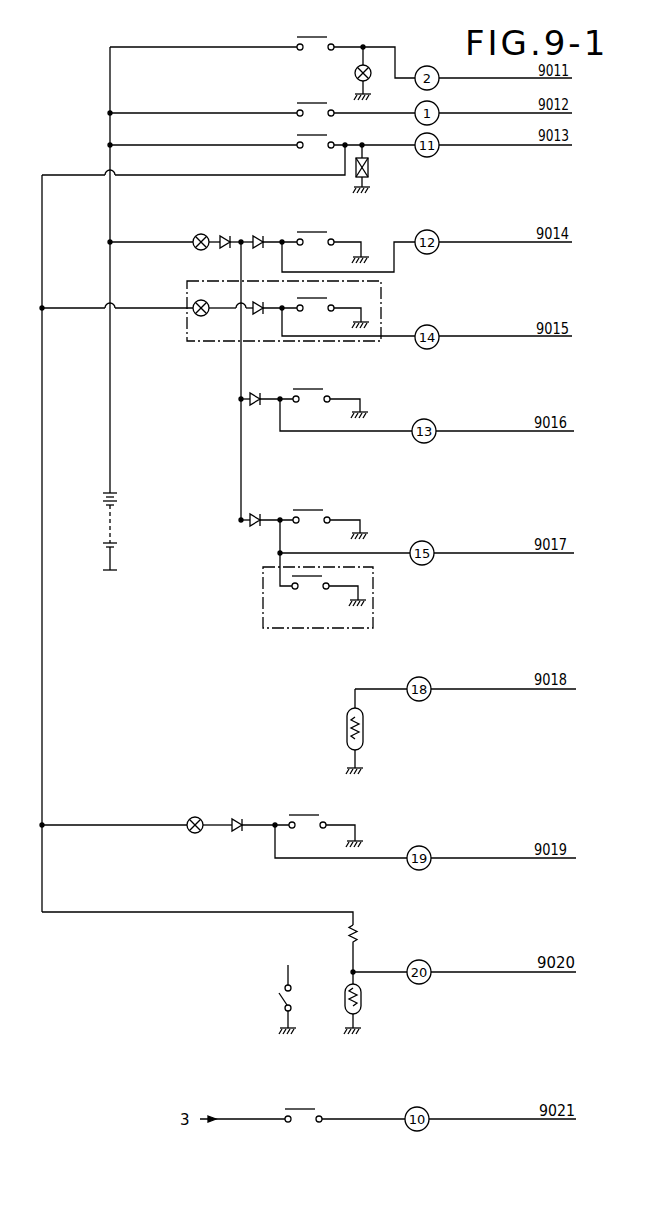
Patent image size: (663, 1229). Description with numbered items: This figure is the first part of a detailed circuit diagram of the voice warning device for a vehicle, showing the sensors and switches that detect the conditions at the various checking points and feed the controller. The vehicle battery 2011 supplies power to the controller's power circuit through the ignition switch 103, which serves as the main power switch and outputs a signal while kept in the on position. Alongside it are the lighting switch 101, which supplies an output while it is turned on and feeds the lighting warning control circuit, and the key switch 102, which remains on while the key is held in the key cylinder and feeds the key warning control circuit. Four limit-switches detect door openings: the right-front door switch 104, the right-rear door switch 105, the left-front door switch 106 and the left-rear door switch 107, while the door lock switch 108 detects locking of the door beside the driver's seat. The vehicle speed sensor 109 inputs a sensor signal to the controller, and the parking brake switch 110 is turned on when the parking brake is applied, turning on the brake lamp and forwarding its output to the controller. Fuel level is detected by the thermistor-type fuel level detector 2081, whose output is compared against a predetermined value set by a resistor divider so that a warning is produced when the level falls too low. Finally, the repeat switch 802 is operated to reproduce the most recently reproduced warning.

The lighting switch 101 is at (325, 37).
The key switch 102 is at (324, 103).
The ignition switch 103 is at (325, 135).
The right-front door switch 104 is at (325, 232).
The right-rear door switch 105 is at (325, 298).
The left-front door switch 106 is at (321, 389).
The left-rear door switch 107 is at (321, 510).
The door lock switch 108 is at (318, 576).
The vehicle speed sensor 109 is at (363, 731).
The parking brake switch 110 is at (314, 815).
The vehicle battery 2011 is at (104, 512).
The fuel level detector 2081 is at (362, 1004).
The repeat switch 802 is at (313, 1109).